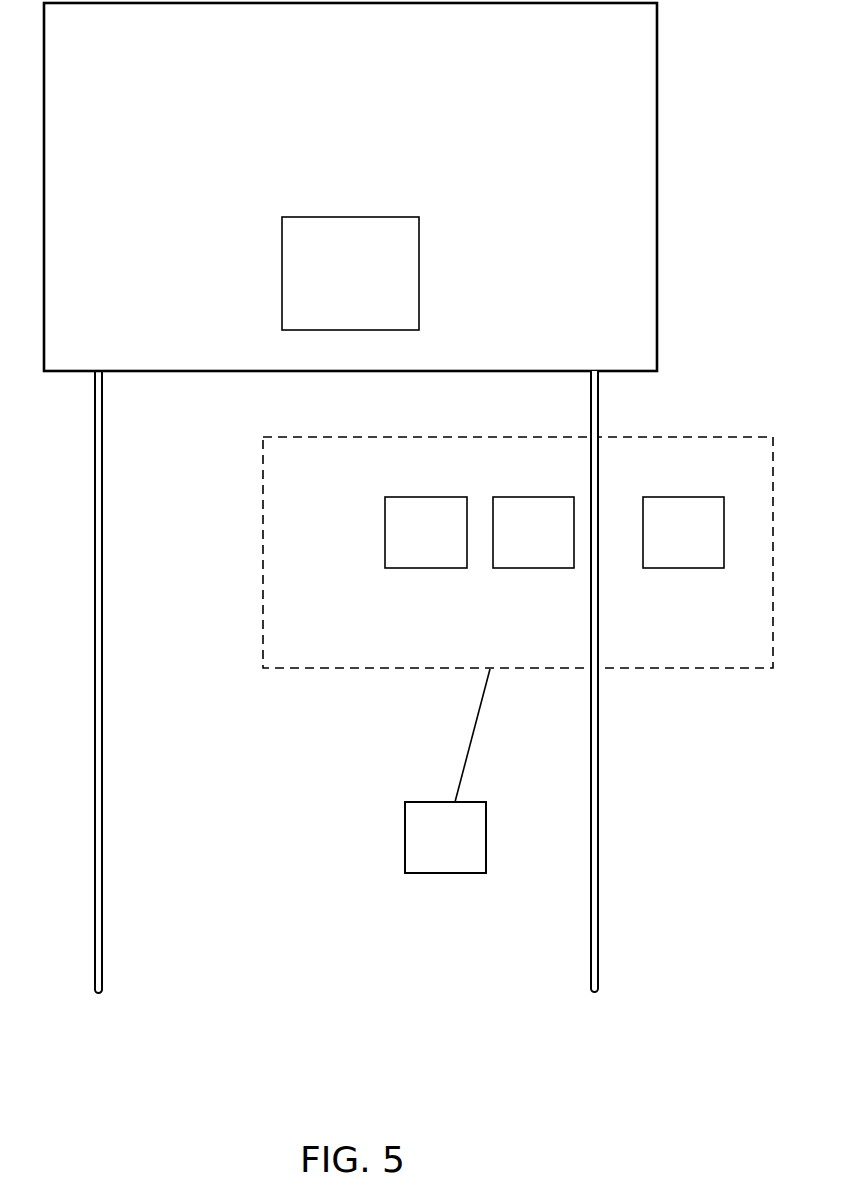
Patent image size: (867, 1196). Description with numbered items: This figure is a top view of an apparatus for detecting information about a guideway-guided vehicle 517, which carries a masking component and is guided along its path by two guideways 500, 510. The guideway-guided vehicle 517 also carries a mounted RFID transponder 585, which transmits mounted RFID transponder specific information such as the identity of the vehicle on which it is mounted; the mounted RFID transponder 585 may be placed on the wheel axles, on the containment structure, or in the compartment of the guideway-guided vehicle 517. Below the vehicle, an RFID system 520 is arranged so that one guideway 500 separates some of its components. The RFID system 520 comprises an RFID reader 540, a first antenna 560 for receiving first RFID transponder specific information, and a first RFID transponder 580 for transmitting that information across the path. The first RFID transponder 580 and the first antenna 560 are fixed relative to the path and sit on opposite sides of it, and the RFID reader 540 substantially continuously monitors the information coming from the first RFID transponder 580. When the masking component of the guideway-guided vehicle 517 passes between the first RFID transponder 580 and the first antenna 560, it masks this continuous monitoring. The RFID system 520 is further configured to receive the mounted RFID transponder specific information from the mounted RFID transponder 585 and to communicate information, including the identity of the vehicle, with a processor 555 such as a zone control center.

The guideway-guided vehicle 517 is at (658, 116).
The mounted RFID transponder 585 is at (397, 278).
The guideway 510 is at (100, 826).
The guideway 500 is at (595, 827).
The RFID system 520 is at (648, 668).
The RFID reader 540 is at (406, 568).
The first antenna 560 is at (515, 568).
The first RFID transponder 580 is at (675, 568).
The processor 555 is at (422, 873).